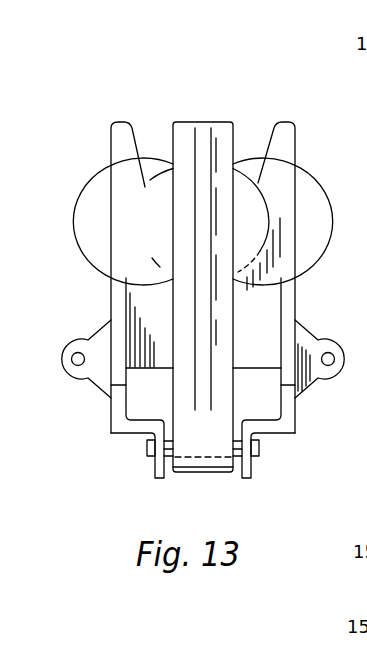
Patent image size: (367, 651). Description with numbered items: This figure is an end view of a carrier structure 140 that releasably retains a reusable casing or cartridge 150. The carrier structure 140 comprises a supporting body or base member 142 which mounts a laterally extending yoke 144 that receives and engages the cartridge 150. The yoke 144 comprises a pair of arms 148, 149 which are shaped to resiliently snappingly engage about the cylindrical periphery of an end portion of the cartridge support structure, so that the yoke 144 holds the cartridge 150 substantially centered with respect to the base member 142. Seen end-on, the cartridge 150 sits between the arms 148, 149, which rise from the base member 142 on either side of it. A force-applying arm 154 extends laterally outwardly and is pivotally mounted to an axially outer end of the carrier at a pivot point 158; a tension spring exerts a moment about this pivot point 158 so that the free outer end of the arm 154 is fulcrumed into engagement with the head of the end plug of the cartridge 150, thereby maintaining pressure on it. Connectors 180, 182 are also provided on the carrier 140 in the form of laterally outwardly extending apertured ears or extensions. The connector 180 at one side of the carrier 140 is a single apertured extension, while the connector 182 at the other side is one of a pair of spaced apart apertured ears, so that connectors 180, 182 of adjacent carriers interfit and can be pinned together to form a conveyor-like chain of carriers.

The carrier structure 140 is at (203, 287).
The base member 142 is at (300, 294).
The yoke 144 is at (132, 280).
The arm 148 is at (283, 143).
The arm 149 is at (119, 139).
The cartridge 150 is at (248, 158).
The arm 154 is at (203, 458).
The pivot point 158 is at (262, 449).
The connector 180 is at (320, 375).
The connector 182 is at (82, 380).